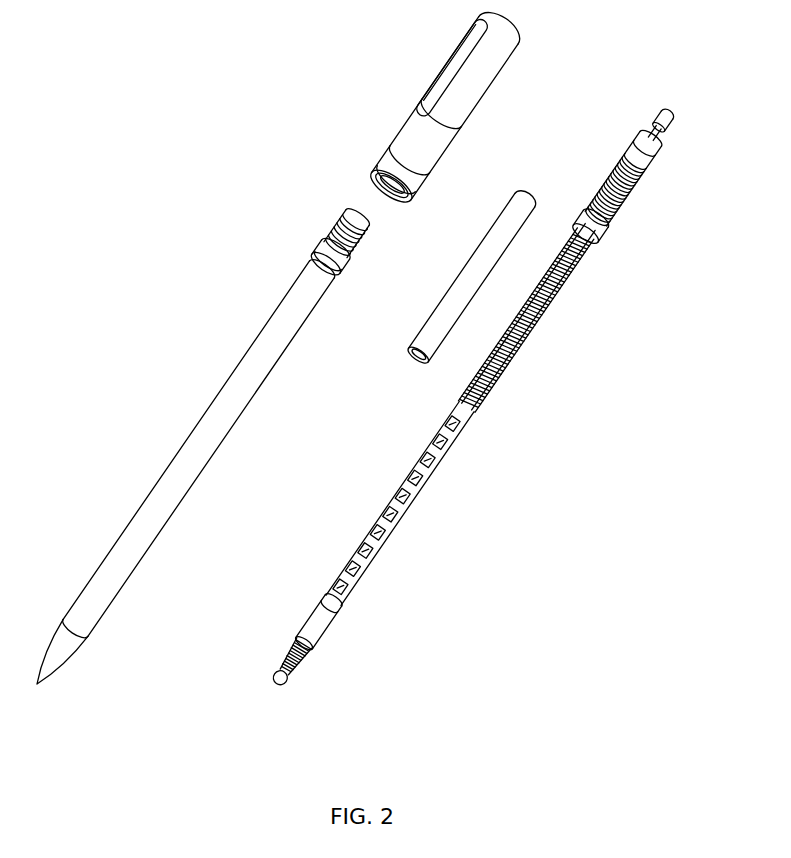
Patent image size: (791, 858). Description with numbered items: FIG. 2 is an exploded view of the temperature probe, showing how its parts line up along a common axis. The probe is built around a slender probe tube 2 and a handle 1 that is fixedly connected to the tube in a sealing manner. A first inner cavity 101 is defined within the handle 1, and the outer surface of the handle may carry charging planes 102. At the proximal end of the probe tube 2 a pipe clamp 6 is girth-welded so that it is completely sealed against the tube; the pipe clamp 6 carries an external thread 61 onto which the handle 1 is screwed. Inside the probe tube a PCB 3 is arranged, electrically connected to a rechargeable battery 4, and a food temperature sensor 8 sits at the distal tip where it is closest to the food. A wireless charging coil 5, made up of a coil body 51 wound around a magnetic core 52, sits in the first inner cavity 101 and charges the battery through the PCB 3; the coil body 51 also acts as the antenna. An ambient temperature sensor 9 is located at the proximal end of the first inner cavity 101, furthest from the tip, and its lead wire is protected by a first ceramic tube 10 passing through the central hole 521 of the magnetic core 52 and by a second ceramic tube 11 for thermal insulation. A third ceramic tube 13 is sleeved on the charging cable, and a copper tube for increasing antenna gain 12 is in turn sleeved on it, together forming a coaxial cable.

The handle 1 is at (413, 123).
The first inner cavity 101 is at (380, 183).
The charging plane 102 is at (445, 75).
The probe tube 2 is at (195, 455).
The PCB 3 is at (415, 495).
The rechargeable battery 4 is at (305, 625).
The wireless charging coil 5 is at (637, 201).
The coil body 51 is at (625, 210).
The magnetic core 52 is at (642, 165).
The central hole 521 is at (586, 220).
The pipe clamp 6 is at (320, 248).
The external thread 61 is at (335, 218).
The food temperature sensor 8 is at (276, 671).
The ambient temperature sensor 9 is at (655, 115).
The first ceramic tube 10 is at (648, 145).
The second ceramic tube 11 is at (582, 270).
The copper tube for increasing antenna gain 12 is at (458, 298).
The third ceramic tube 13 is at (522, 320).